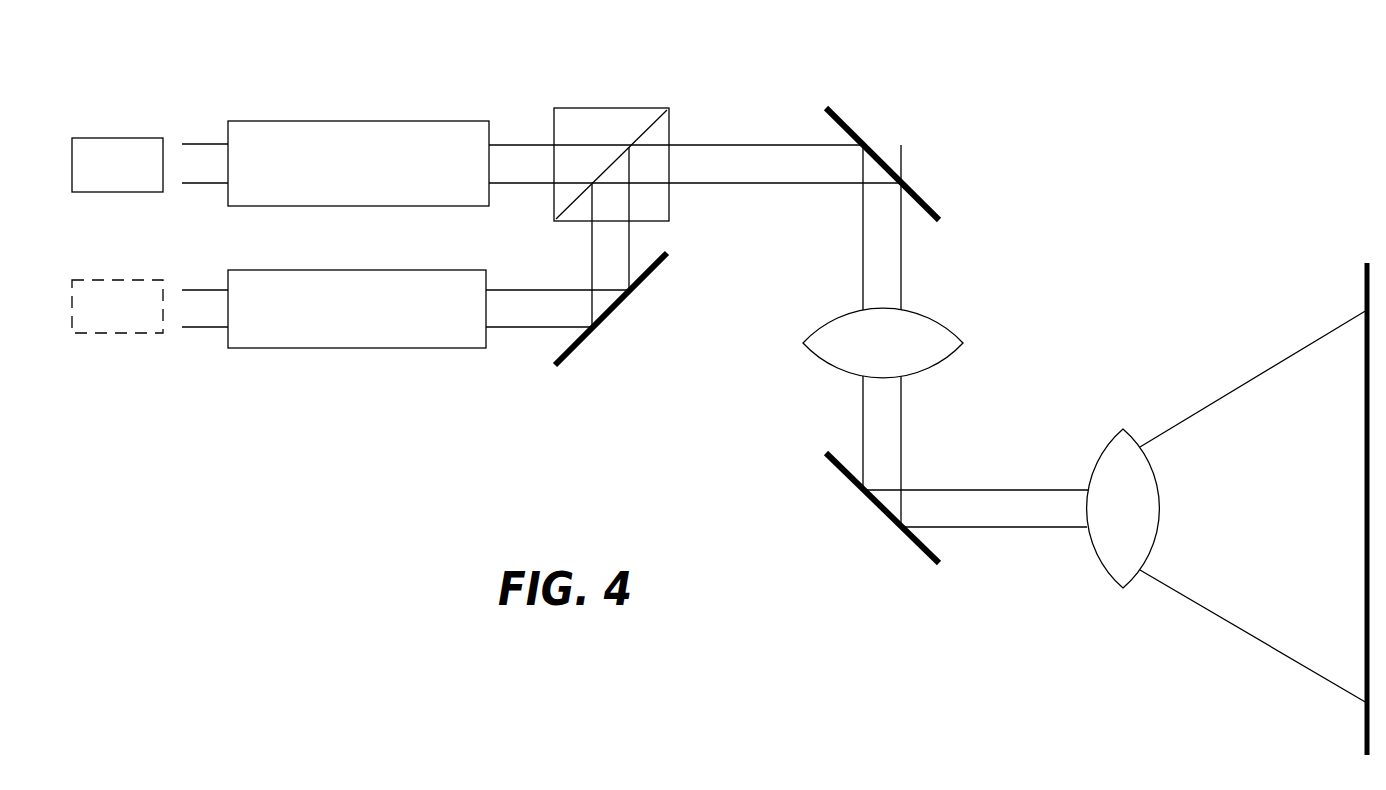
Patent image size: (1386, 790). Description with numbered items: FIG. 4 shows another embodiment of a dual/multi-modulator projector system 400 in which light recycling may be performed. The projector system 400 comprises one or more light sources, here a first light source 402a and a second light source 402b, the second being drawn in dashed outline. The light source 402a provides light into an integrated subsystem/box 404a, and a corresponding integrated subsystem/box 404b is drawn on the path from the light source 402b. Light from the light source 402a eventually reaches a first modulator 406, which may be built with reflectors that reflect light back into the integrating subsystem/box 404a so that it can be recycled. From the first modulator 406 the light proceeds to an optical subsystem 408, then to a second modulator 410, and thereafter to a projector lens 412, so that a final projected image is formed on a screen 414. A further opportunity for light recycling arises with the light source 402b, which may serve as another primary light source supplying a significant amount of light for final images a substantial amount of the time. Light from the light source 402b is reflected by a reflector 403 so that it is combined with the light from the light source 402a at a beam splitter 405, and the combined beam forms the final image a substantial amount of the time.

The dual/multi-modulator projector system 400 is at (887, 40).
The light source 402a is at (112, 138).
The light source 402b is at (112, 280).
The integrated subsystem/box 404a is at (340, 121).
The integrated subsystem/box 404b is at (340, 270).
The beam splitter 405 is at (612, 108).
The reflector 403 is at (572, 354).
The first modulator 406 is at (840, 117).
The optical subsystem 408 is at (933, 316).
The second modulator 410 is at (912, 548).
The projector lens 412 is at (1112, 438).
The screen 414 is at (1365, 292).